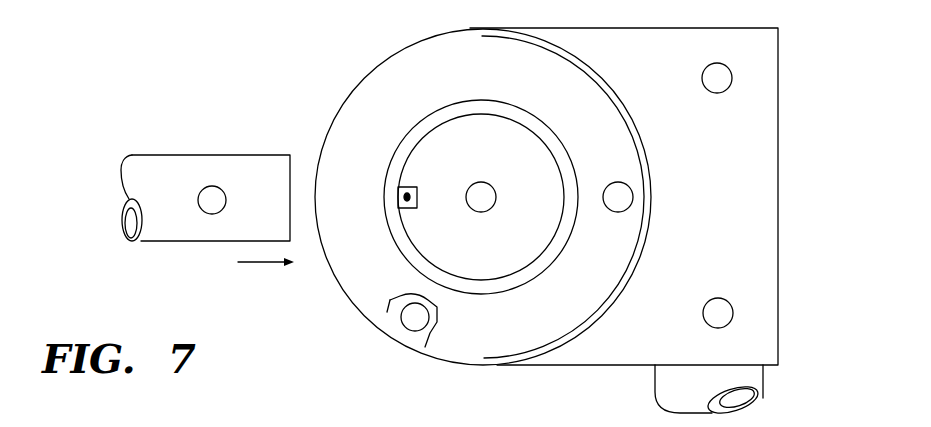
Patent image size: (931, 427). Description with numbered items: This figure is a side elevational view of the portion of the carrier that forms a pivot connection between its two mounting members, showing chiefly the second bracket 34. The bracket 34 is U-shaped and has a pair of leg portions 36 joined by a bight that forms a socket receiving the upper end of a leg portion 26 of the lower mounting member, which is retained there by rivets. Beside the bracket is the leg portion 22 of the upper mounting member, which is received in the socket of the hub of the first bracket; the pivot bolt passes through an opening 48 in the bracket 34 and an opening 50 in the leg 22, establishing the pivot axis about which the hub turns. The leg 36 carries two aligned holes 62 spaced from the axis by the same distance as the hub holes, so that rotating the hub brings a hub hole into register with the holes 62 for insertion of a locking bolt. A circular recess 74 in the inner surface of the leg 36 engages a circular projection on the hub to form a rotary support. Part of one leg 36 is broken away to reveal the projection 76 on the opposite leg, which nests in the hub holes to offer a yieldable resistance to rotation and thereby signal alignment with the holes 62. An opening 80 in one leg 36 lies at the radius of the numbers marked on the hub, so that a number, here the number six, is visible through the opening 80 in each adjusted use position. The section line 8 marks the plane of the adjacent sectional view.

The section line 8- 8 is at (100, 200).
The leg portion of the upper mounting member 22 is at (267, 163).
The leg portion of the lower mounting member 26 is at (752, 377).
The second bracket 34 is at (688, 22).
The leg portion of the second bracket 36 is at (457, 348).
The opening in the bracket 48 is at (475, 197).
The opening in the leg 50 is at (206, 203).
The aligned holes of the bracket legs 62 is at (625, 197).
The circular recess 74 is at (523, 168).
The projection 76 is at (410, 317).
The opening 80 is at (400, 210).